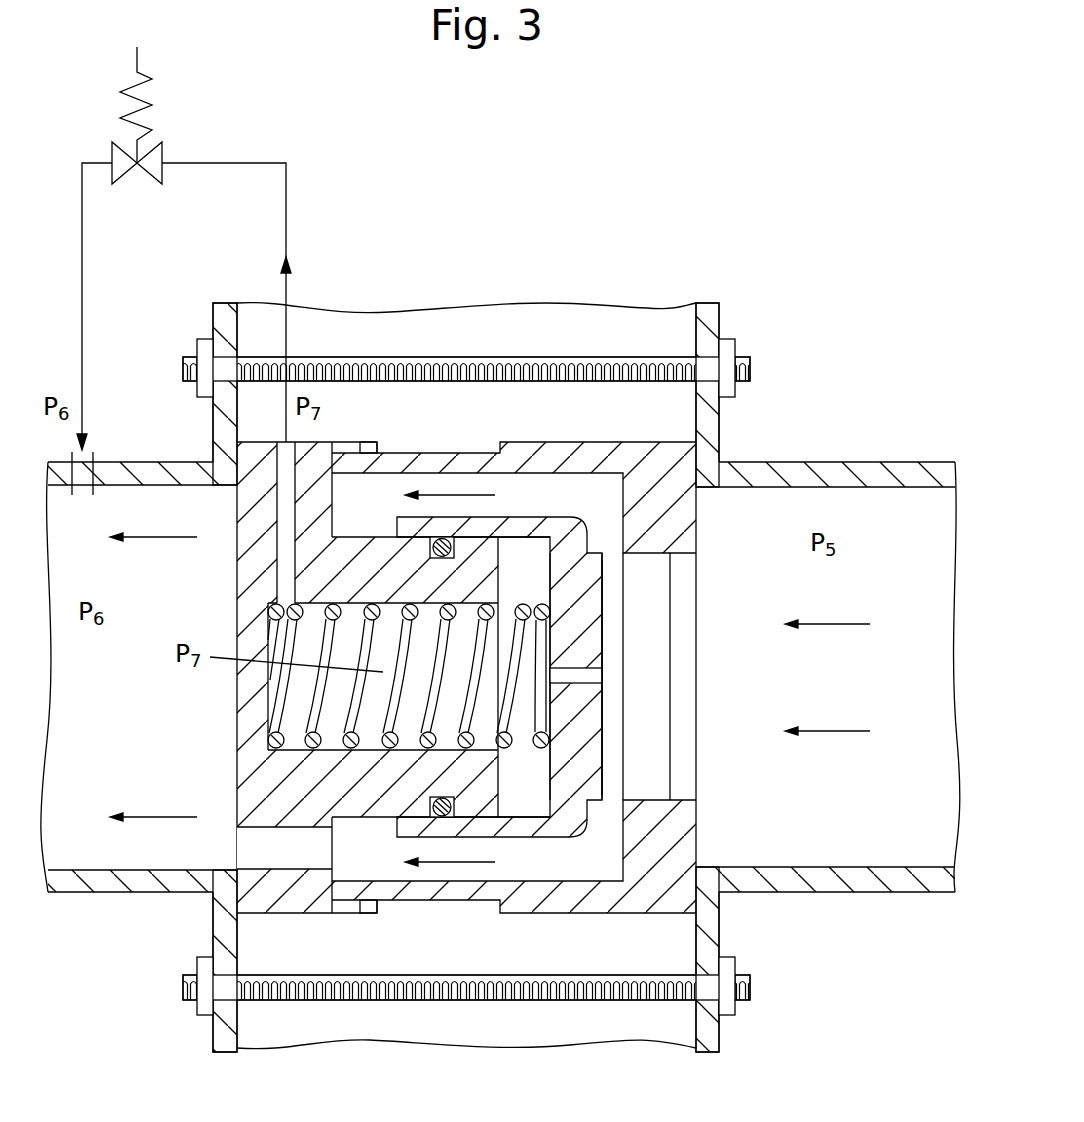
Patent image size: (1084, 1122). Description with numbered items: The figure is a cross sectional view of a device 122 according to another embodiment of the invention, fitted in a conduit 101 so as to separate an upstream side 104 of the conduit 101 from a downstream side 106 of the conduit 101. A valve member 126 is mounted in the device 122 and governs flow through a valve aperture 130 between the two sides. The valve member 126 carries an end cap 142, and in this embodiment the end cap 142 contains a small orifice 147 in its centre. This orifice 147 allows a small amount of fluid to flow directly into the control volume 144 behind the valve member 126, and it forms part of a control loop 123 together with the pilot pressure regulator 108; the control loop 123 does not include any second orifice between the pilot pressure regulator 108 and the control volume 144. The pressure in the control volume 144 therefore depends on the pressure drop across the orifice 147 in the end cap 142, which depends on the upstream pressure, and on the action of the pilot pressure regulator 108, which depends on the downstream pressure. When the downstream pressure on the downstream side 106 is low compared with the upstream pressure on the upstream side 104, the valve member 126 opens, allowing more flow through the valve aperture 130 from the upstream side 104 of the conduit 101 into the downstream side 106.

The conduit 101 is at (858, 468).
The upstream side 104 is at (855, 682).
The downstream side 106 is at (155, 709).
The pilot pressure regulator 108 is at (163, 151).
The device 122 is at (760, 935).
The control loop 123 is at (272, 163).
The valve member 126 is at (551, 823).
The valve aperture 130 is at (657, 673).
The end cap 142 is at (595, 628).
The control volume 144 is at (307, 642).
The orifice 147 is at (595, 678).